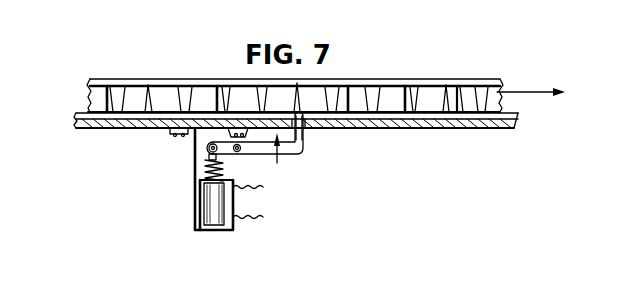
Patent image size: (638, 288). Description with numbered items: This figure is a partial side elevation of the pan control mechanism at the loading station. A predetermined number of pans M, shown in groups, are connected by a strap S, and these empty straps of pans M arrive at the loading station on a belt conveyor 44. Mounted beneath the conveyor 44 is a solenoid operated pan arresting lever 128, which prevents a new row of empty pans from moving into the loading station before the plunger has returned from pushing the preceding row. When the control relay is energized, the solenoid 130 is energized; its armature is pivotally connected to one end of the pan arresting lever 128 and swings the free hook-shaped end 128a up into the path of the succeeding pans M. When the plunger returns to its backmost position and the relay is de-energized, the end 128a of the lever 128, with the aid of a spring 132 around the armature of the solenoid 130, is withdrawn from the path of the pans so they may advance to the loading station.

The belt conveyor 44 is at (102, 115).
The pan arresting lever 128 is at (286, 150).
The hook-shaped end 128a is at (305, 130).
The solenoid 130 is at (217, 215).
The spring 132 is at (205, 170).
The pans M is at (100, 95).
The strap S is at (117, 83).